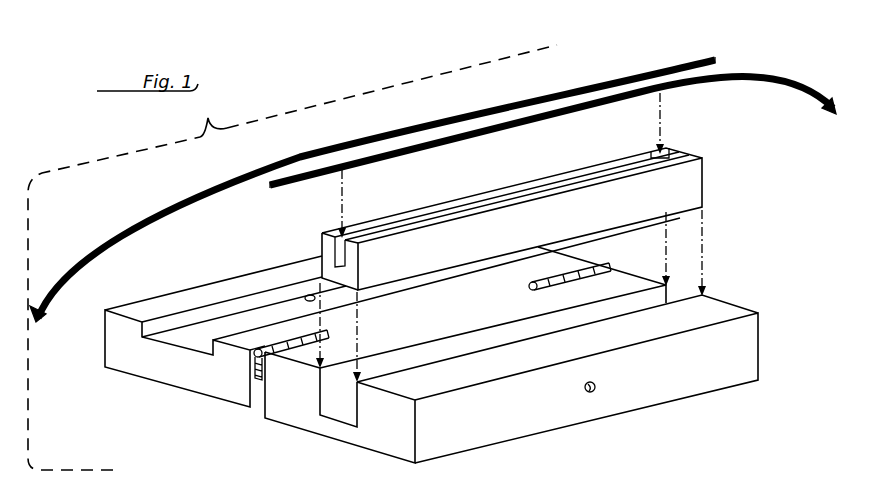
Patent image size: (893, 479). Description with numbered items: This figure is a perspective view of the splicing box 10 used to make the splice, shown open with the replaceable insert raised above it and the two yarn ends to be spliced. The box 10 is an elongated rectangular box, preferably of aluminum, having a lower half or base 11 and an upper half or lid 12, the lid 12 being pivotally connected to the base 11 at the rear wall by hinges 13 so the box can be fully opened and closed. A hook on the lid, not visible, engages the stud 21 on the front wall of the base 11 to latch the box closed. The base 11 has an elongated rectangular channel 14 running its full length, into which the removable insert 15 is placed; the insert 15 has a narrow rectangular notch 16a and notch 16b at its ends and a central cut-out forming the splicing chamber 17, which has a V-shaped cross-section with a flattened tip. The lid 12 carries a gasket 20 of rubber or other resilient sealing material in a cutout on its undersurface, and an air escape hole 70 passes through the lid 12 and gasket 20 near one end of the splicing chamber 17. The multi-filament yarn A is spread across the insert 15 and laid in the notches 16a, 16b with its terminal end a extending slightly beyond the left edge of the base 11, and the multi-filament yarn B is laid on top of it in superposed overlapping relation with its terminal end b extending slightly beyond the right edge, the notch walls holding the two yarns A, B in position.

The splicing box 10 is at (431, 346).
The base 11 is at (390, 433).
The lid 12 is at (118, 332).
The hinges 13 is at (257, 357).
The channel 14 is at (337, 392).
The insert 15 is at (524, 206).
The notch 16a is at (337, 247).
The notch 16b is at (670, 153).
The splicing chamber 17 is at (460, 213).
The gasket 20 is at (197, 328).
The stud 21 is at (592, 392).
The air escape hole 70 is at (308, 297).
The yarn A is at (573, 115).
The yarn B is at (235, 182).
The terminal end a is at (276, 186).
The terminal end b is at (717, 59).